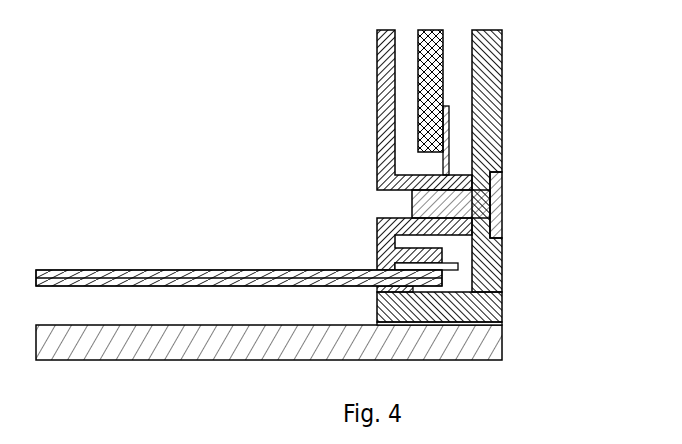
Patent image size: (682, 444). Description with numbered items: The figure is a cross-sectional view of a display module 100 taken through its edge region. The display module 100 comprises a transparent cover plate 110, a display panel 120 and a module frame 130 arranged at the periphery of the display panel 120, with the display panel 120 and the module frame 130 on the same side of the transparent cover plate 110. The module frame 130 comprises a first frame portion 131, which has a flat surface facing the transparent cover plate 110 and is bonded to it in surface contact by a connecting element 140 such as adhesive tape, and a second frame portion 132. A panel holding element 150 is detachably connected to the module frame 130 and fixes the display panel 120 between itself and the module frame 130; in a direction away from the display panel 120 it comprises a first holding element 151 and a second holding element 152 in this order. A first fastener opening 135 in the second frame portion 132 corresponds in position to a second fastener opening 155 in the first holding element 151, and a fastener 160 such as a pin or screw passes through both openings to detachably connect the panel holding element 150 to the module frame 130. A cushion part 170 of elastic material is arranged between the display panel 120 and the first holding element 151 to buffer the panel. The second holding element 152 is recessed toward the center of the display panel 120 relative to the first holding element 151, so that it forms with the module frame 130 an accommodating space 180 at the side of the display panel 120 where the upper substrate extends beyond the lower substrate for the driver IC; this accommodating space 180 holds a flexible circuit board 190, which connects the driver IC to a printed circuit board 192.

The display module 100 is at (71, 57).
The transparent cover plate 110 is at (190, 335).
The display panel 120 is at (183, 270).
The module frame 130 is at (509, 176).
The first frame portion 131 is at (505, 305).
The second frame portion 132 is at (503, 258).
The first fastener opening 135 is at (503, 225).
The connecting element 140 is at (503, 330).
The panel holding element 150 is at (346, 161).
The first holding element 151 is at (377, 235).
The second holding element 152 is at (385, 133).
The second fastener opening 155 is at (356, 200).
The fastener 160 is at (500, 197).
The cushion part 170 is at (392, 252).
The accommodating space 180 is at (432, 102).
The flexible circuit board 190 is at (446, 137).
The printed circuit board 192 is at (428, 88).